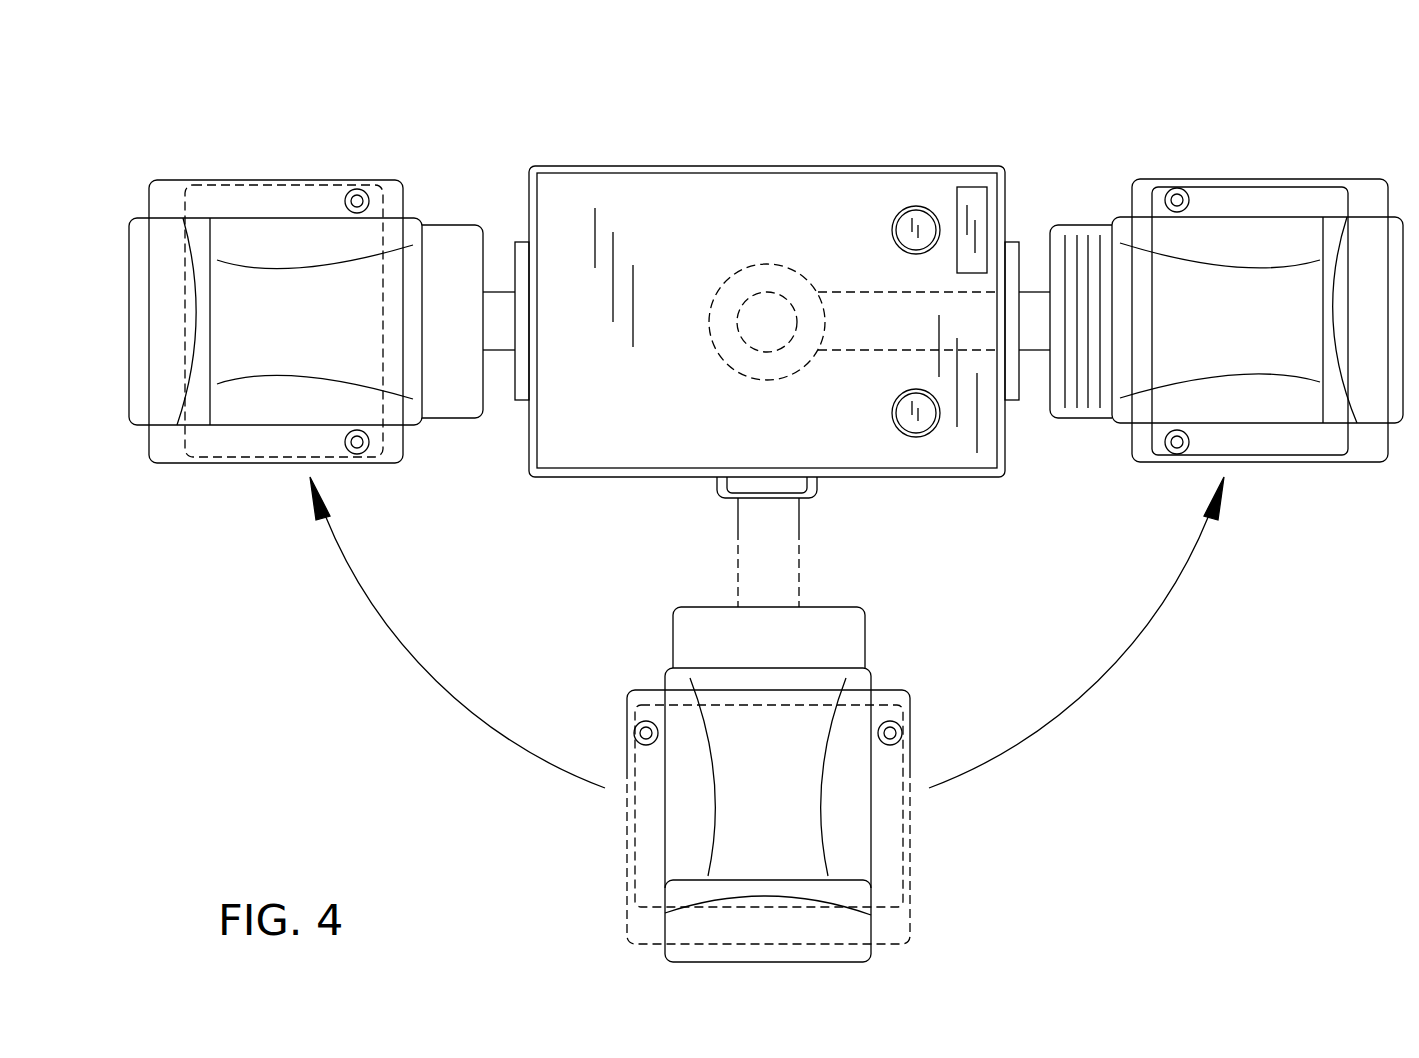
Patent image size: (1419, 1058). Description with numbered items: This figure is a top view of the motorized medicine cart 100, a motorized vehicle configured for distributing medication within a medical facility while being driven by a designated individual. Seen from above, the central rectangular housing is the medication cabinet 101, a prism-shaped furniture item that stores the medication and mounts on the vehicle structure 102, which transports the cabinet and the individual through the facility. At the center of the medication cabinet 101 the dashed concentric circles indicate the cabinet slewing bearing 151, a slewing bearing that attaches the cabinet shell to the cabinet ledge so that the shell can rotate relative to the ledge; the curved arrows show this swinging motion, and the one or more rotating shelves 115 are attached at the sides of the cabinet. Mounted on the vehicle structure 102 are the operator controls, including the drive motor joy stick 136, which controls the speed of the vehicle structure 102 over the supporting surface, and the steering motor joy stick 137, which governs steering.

The motorized medicine cart 100 is at (245, 130).
The medication cabinet 101 is at (752, 166).
The vehicle structure 102 is at (1226, 309).
The rotating shelves 115 is at (517, 243).
The drive motor joy stick 136 is at (1177, 190).
The steering motor joy stick 137 is at (1177, 452).
The cabinet slewing bearing 151 is at (777, 265).